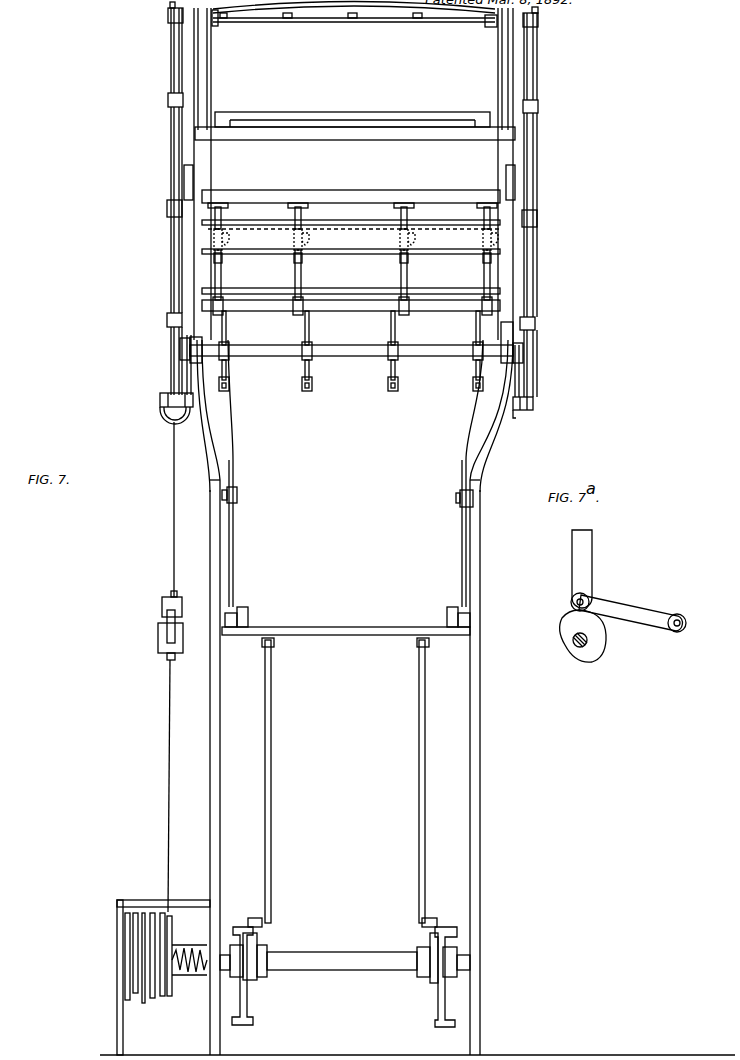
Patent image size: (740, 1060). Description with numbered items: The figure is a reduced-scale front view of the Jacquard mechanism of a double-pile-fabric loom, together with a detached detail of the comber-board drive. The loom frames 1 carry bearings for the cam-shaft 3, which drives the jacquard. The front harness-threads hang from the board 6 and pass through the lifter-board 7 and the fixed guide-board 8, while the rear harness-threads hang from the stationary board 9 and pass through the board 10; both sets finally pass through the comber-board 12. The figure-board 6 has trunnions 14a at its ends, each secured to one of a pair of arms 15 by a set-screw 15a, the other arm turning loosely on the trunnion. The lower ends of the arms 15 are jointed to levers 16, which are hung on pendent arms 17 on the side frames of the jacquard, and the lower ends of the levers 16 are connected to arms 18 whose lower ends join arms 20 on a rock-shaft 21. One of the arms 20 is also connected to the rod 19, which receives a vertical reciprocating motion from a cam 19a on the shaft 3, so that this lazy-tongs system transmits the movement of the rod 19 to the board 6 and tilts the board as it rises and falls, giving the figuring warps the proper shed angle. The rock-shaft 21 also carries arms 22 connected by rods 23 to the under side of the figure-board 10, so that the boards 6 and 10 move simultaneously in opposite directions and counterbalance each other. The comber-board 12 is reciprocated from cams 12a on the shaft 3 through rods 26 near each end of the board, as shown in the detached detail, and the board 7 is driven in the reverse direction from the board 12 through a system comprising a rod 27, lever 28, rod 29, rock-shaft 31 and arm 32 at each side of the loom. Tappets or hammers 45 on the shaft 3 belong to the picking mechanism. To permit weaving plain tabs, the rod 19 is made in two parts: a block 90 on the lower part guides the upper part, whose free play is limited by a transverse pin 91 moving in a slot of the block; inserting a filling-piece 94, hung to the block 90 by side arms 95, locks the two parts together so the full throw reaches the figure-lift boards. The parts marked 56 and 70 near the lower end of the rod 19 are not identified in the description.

In FIG. 7, the frames 1 is at (417, 767).
In FIG. 7, the cam-shaft 3 is at (345, 961).
In FIG. 7a, the cam-shaft 3 is at (578, 647).
In FIG. 7, the figure-board 6 is at (352, 22).
In FIG. 7, the lifter-board 7 is at (355, 165).
In FIG. 7, the fixed guide-board 8 is at (351, 282).
In FIG. 7, the stationary board 9 is at (352, 114).
In FIG. 7, the figure-board 10 is at (351, 231).
In FIG. 7, the comber-board 12 is at (346, 624).
In FIG. 7, the cams 12a is at (257, 937).
In FIG. 7a, the cams 12a is at (560, 628).
In FIG. 7, the trunnions 14a is at (512, 24).
In FIG. 7, the arms 15 is at (355, 60).
In FIG. 7, the set-screw 15a is at (168, 10).
In FIG. 7, the levers 16 is at (532, 285).
In FIG. 7, the pendent arms 17 is at (193, 190).
In FIG. 7, the arms 18 is at (171, 367).
In FIG. 7, the rod 19 is at (172, 528).
In FIG. 7, the cam 19a is at (167, 998).
In FIG. 7, the arms 20 is at (514, 428).
In FIG. 7, the rock-shaft 21 is at (351, 353).
In FIG. 7, the arms 22 is at (351, 375).
In FIG. 7, the rods 23 is at (351, 335).
In FIG. 7, the rods 26 is at (271, 772).
In FIG. 7a, the rods 26 is at (576, 563).
In FIG. 7, the rod 27 is at (347, 543).
In FIG. 7, the lever 28 is at (237, 490).
In FIG. 7, the rod 29 is at (355, 416).
In FIG. 7, the rock-shaft 31 is at (351, 305).
In FIG. 7, the arm 32 is at (351, 259).
In FIG. 7, the tappets or hammers 45 is at (341, 969).
In FIG. 7, the weight plate 56 is at (128, 998).
In FIG. 7, the spring 70 is at (189, 969).
In FIG. 7, the block 90 is at (177, 593).
In FIG. 7, the transverse bar or pin 91 is at (162, 607).
In FIG. 7, the filling-piece 94 is at (167, 624).
In FIG. 7, the side arms 95 is at (158, 641).